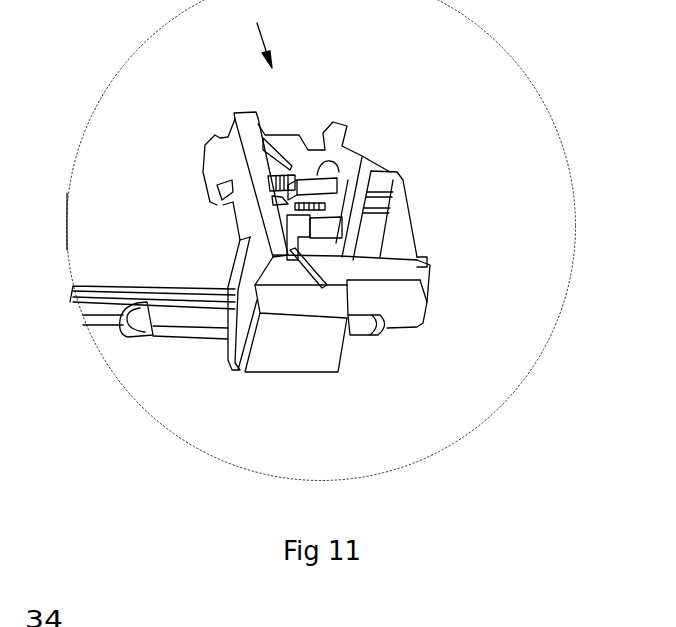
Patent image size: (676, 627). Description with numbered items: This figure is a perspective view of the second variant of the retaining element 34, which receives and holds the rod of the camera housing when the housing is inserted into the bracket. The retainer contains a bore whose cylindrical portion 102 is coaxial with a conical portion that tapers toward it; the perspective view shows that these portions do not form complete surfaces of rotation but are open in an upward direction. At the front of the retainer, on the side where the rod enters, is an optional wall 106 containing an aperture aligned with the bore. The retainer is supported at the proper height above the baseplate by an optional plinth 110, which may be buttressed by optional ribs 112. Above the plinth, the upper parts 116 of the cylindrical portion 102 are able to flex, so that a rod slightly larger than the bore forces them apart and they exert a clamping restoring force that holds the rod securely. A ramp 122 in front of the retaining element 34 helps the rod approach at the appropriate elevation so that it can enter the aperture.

The retaining element 34 is at (176, 229).
The cylindrical portion 102 is at (332, 212).
The wall 106 is at (228, 143).
The plinth 110 is at (320, 358).
The ribs 112 is at (335, 123).
The upper parts of the cylindrical portion 116 is at (318, 188).
The ramp 122 is at (172, 318).